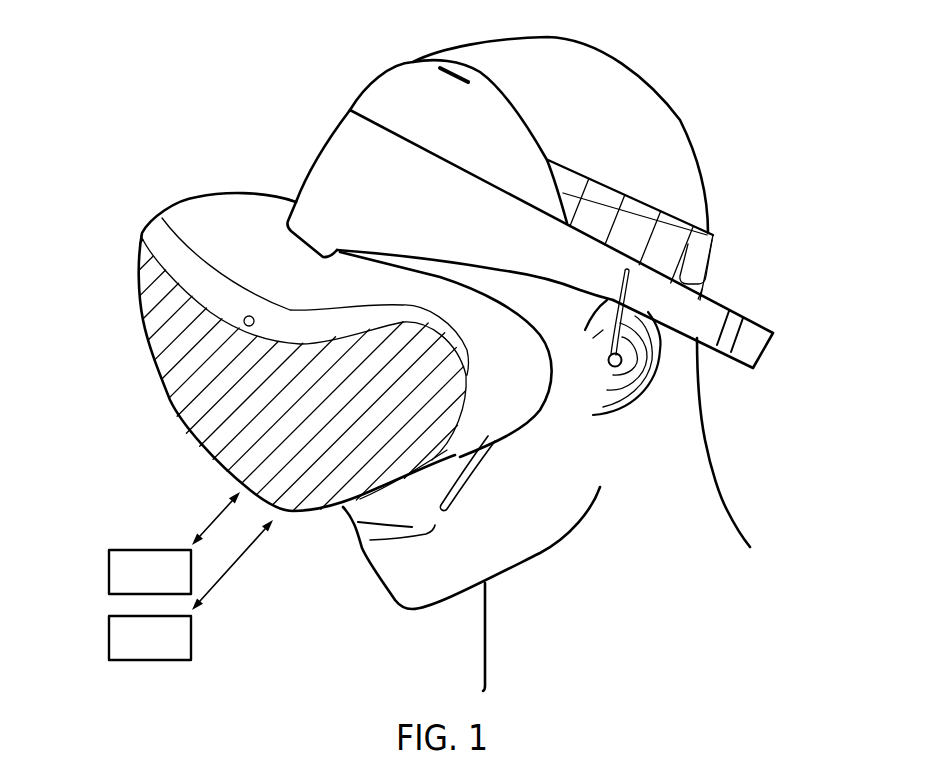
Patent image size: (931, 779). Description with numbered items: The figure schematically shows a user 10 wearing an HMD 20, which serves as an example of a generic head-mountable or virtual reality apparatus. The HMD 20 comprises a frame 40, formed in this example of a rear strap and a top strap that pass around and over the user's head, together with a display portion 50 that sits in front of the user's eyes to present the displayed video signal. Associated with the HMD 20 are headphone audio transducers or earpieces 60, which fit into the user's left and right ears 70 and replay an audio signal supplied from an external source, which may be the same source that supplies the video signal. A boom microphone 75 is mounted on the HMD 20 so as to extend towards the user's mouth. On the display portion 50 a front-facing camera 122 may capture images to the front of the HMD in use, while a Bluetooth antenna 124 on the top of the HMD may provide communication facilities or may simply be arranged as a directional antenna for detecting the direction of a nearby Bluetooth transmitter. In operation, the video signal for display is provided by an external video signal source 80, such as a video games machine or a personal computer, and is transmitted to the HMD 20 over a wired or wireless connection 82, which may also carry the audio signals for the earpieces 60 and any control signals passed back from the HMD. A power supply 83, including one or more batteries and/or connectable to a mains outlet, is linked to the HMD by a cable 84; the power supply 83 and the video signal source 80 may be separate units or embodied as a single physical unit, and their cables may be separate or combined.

The user 10 is at (727, 511).
The HMD 20 is at (163, 182).
The frame 40 is at (760, 343).
The display portion 50 is at (158, 237).
The earpieces 60 is at (605, 378).
The ears 70 is at (663, 365).
The boom microphone 75 is at (453, 507).
The external video signal source 80 is at (109, 573).
The wired or wireless connection 82 is at (210, 520).
The power supply 83 is at (109, 640).
The cable 84 is at (237, 557).
The front-facing camera 122 is at (243, 321).
The Bluetooth antenna 124 is at (437, 70).